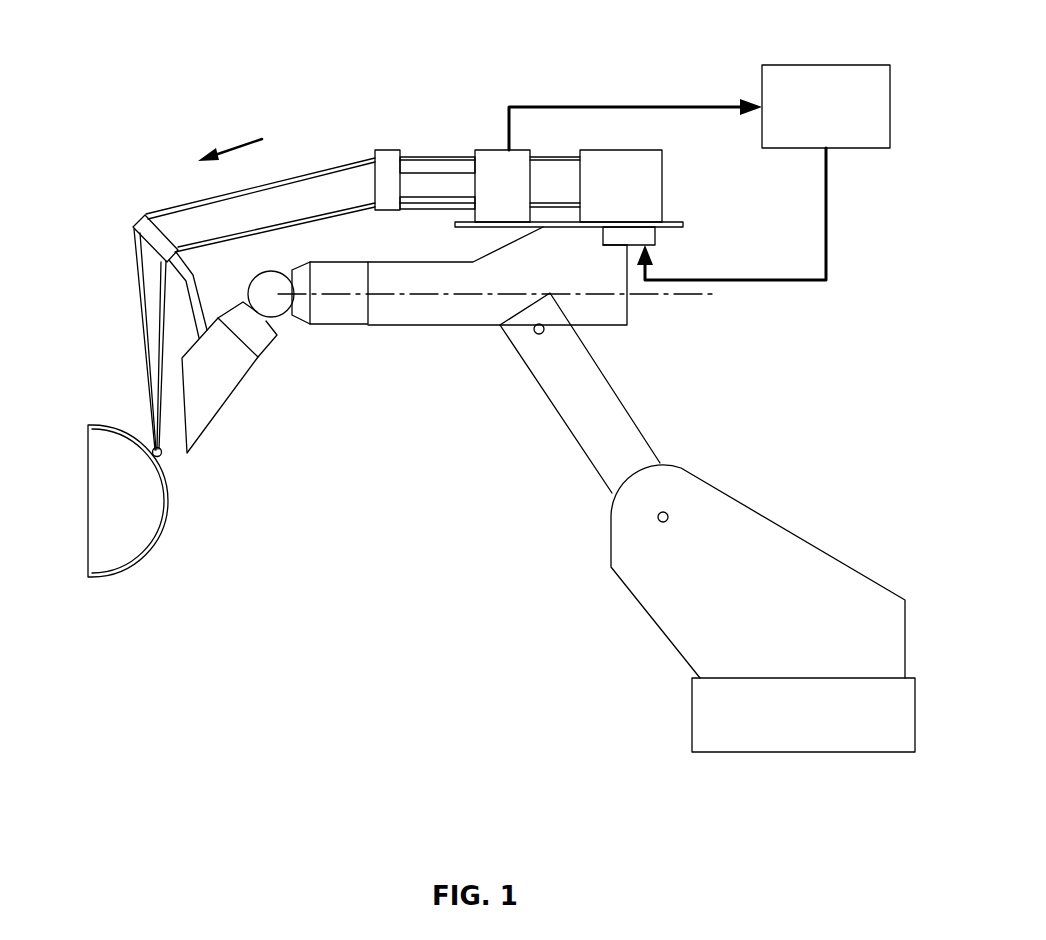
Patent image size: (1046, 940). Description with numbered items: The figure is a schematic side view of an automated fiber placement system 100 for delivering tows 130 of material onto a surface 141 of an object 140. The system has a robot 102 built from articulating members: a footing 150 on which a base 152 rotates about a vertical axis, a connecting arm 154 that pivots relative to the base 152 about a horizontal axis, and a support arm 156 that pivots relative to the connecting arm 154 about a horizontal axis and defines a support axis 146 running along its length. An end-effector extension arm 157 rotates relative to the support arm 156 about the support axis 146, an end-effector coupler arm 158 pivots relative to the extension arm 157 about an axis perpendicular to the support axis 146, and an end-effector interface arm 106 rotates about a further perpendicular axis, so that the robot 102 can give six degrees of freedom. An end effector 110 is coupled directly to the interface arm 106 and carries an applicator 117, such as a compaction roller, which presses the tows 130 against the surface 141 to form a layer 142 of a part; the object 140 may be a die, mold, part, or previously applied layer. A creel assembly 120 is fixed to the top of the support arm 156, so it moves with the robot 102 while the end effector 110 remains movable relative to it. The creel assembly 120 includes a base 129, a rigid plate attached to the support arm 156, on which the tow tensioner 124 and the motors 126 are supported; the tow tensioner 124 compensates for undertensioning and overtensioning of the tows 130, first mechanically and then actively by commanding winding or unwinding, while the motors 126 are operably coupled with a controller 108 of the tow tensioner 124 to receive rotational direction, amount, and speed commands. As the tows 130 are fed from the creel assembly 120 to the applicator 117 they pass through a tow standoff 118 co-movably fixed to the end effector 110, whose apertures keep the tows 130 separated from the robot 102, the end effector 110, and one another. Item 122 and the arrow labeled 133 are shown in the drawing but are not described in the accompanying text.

The automated fiber placement system 100 is at (686, 60).
The robot 102 is at (627, 384).
The end-effector interface arm 106 is at (263, 342).
The controller 108 is at (826, 106).
The end effector 110 is at (229, 419).
The applicator 117 is at (161, 456).
The tow standoff 118 is at (143, 216).
The creel assembly 120 is at (652, 134).
The actuator block 122 is at (608, 144).
The tow tensioner 124 is at (492, 140).
The motors 126 is at (653, 237).
The base 129 is at (676, 222).
The tows 130 is at (338, 167).
The direction of movement 133 is at (219, 132).
The object 140 is at (103, 450).
The surface 141 is at (130, 427).
The layer 142 is at (152, 556).
The support axis 146 is at (680, 297).
The footing 150 is at (898, 707).
The base 152 is at (767, 536).
The connecting arm 154 is at (616, 431).
The support arm 156 is at (437, 312).
The end-effector extension arm 157 is at (338, 316).
The end-effector coupler arm 158 is at (273, 306).